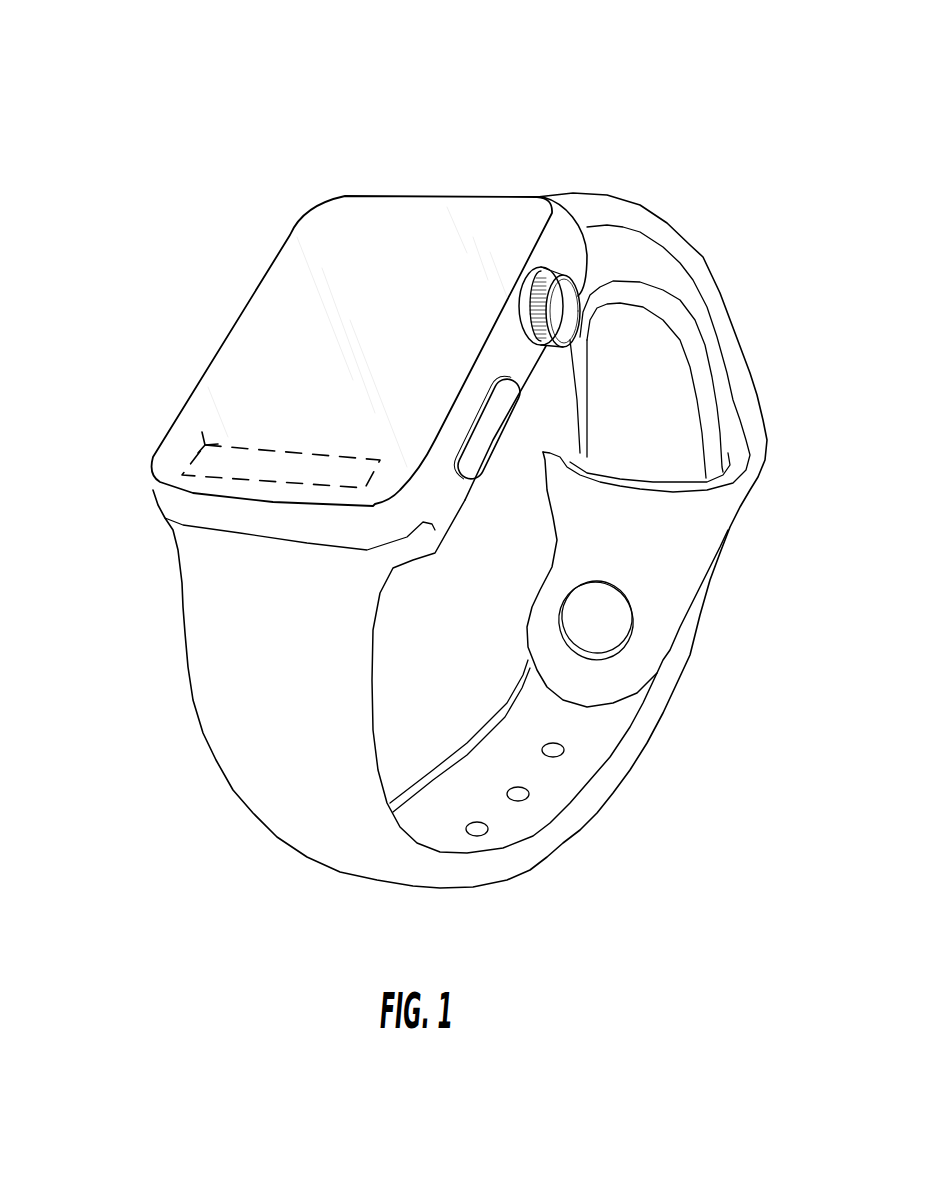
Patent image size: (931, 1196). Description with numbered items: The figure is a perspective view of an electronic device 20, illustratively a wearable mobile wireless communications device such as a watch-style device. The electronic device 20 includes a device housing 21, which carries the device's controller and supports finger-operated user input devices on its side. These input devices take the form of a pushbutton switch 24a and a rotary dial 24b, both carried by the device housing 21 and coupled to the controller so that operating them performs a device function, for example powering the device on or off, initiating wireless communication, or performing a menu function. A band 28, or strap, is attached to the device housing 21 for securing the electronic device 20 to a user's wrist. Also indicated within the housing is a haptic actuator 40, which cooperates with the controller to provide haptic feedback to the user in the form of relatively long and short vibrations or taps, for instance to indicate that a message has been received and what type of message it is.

The electronic device 20 is at (248, 157).
The device housing 21 is at (150, 494).
The pushbutton switch 24a is at (648, 409).
The rotary dial 24b is at (654, 233).
The band 28 is at (207, 615).
The haptic actuator 40 is at (202, 432).